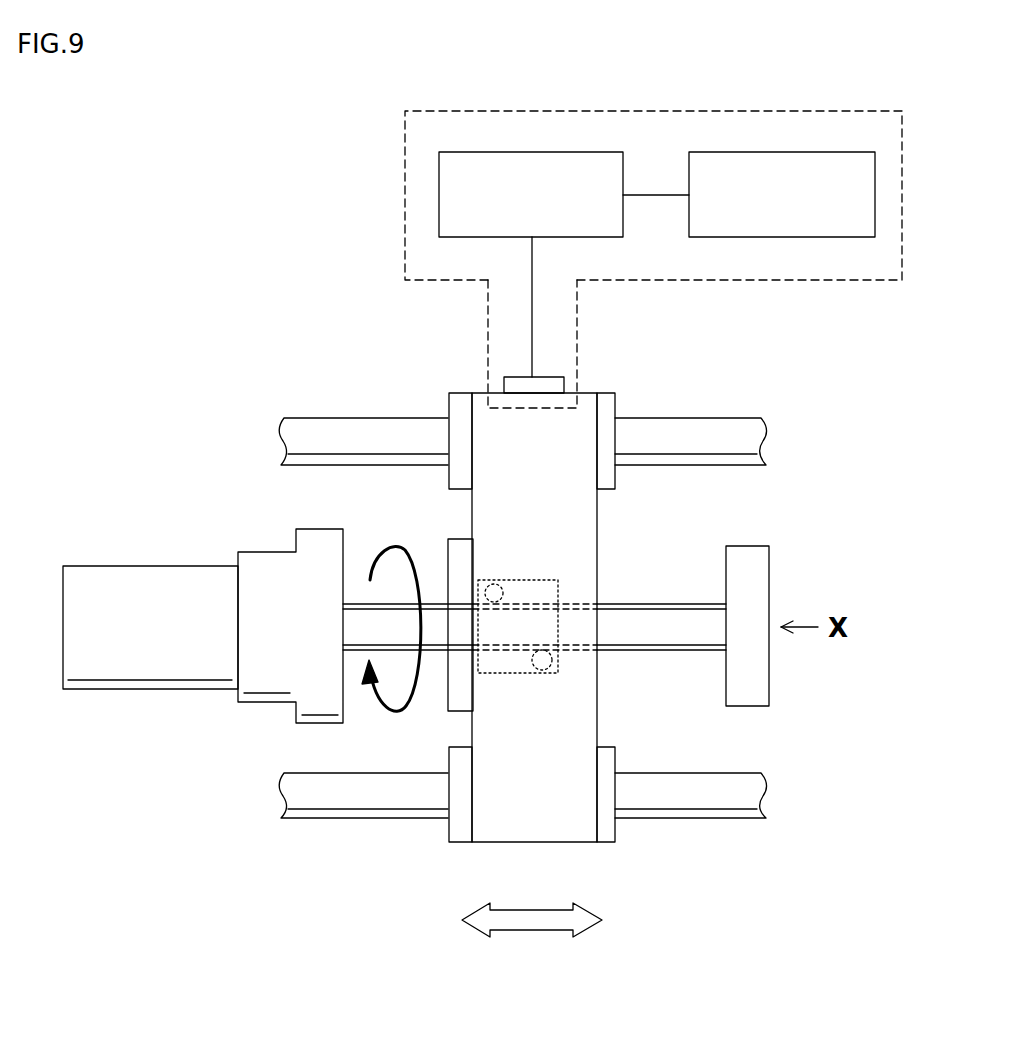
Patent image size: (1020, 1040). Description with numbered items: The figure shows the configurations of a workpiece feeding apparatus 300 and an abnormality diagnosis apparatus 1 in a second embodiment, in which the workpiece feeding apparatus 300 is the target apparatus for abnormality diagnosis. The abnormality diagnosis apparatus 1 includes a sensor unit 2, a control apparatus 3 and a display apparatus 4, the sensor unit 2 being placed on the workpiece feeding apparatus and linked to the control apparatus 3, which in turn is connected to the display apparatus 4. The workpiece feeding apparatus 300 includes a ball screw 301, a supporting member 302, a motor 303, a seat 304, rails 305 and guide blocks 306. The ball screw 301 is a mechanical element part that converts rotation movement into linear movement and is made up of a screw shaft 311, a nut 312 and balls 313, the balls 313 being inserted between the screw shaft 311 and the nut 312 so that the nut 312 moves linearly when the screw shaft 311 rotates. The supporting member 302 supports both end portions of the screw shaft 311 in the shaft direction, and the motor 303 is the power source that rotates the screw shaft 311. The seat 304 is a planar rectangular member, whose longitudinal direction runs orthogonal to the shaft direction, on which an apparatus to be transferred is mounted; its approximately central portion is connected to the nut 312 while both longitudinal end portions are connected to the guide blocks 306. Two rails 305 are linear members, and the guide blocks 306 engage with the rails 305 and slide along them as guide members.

The abnormality diagnosis apparatus 1 is at (673, 109).
The sensor unit 2 is at (517, 388).
The control apparatus 3 is at (583, 152).
The display apparatus 4 is at (832, 152).
The workpiece feeding apparatus 300 is at (193, 423).
The ball screw 301 is at (461, 624).
The supporting member 302 is at (267, 693).
The motor 303 is at (116, 665).
The seat 304 is at (582, 403).
The rails 305 is at (740, 438).
The guide blocks 306 is at (607, 407).
The screw shaft 311 is at (360, 650).
The nut 312 is at (556, 590).
The balls 313 is at (456, 590).